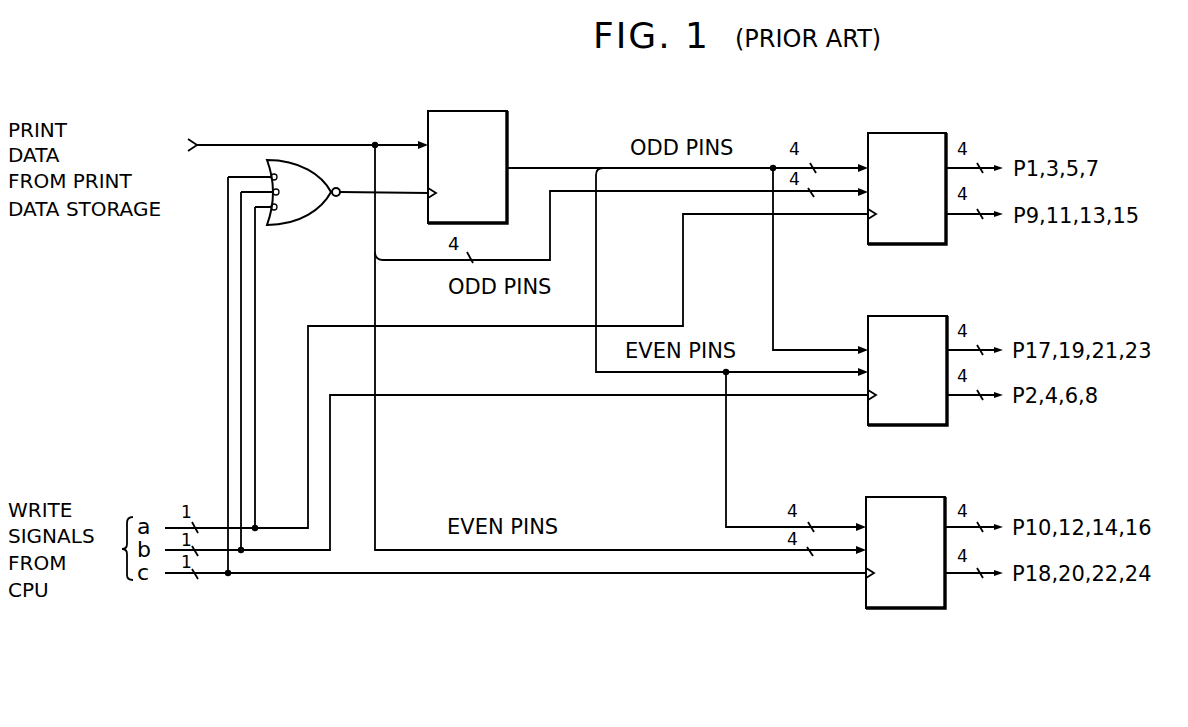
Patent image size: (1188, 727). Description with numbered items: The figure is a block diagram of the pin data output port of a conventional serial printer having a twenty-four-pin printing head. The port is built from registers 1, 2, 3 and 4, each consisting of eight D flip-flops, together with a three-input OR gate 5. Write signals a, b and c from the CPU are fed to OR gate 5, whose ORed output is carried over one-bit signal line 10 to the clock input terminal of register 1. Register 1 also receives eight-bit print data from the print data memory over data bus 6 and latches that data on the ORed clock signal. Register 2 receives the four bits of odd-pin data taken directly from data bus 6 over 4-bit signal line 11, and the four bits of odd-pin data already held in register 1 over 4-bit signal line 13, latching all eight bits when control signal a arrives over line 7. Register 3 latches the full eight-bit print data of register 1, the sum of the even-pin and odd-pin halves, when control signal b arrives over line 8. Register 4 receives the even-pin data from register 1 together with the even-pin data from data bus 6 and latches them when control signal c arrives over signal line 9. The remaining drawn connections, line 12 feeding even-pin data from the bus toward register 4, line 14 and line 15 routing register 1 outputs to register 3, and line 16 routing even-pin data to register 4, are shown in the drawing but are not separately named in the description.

The register 1 is at (467, 111).
The register 2 is at (906, 133).
The register 3 is at (906, 316).
The register 4 is at (906, 497).
The 3-input OR gate 5 is at (310, 221).
The data bus 6 is at (255, 145).
The line 7 is at (403, 326).
The line 8 is at (323, 150).
The signal line 9 is at (435, 573).
The one-bit signal line 10 is at (399, 193).
The 4-bit signal line 11 is at (632, 191).
The even pins data line to fourth flip-flop 12 is at (604, 551).
The 4-bit signal line 13 is at (549, 168).
The even pins line to third flip-flop 14 is at (597, 290).
The odd pins line to third flip-flop 15 is at (775, 288).
The even pins line to fourth flip-flop 16 is at (728, 471).